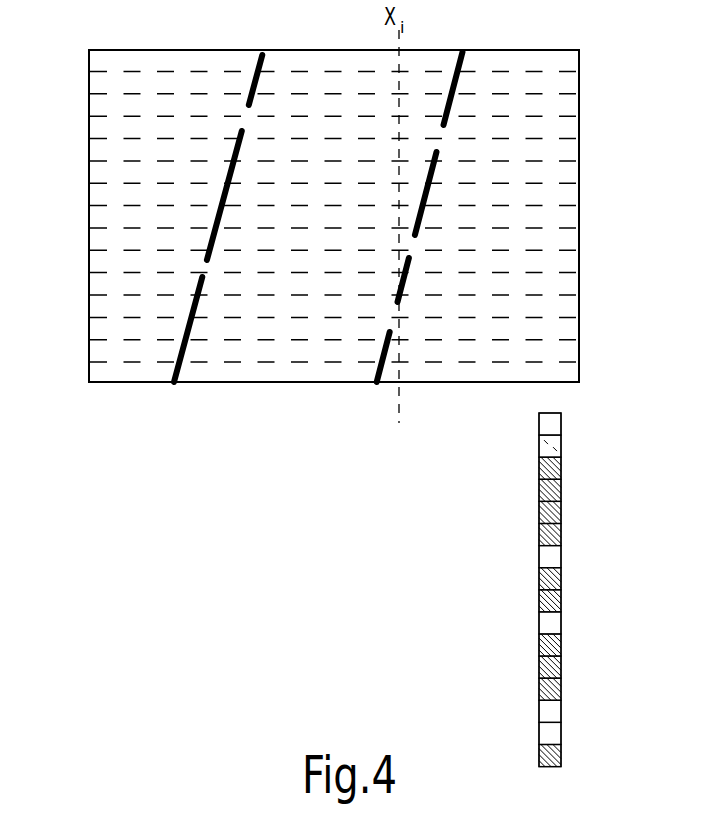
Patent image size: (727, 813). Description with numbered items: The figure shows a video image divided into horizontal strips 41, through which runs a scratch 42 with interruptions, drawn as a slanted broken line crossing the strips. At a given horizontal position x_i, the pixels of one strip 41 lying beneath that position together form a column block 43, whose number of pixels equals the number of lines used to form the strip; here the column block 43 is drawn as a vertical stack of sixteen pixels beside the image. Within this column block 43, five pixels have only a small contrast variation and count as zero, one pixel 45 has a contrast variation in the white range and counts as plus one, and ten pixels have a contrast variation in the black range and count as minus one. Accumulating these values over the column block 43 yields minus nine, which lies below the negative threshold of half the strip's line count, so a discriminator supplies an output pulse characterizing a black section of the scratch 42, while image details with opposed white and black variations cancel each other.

The strip 41 is at (102, 310).
The scratch 42 is at (463, 50).
The column block 43 is at (407, 283).
The pixel having a contrast variation in the white range 45 is at (552, 449).